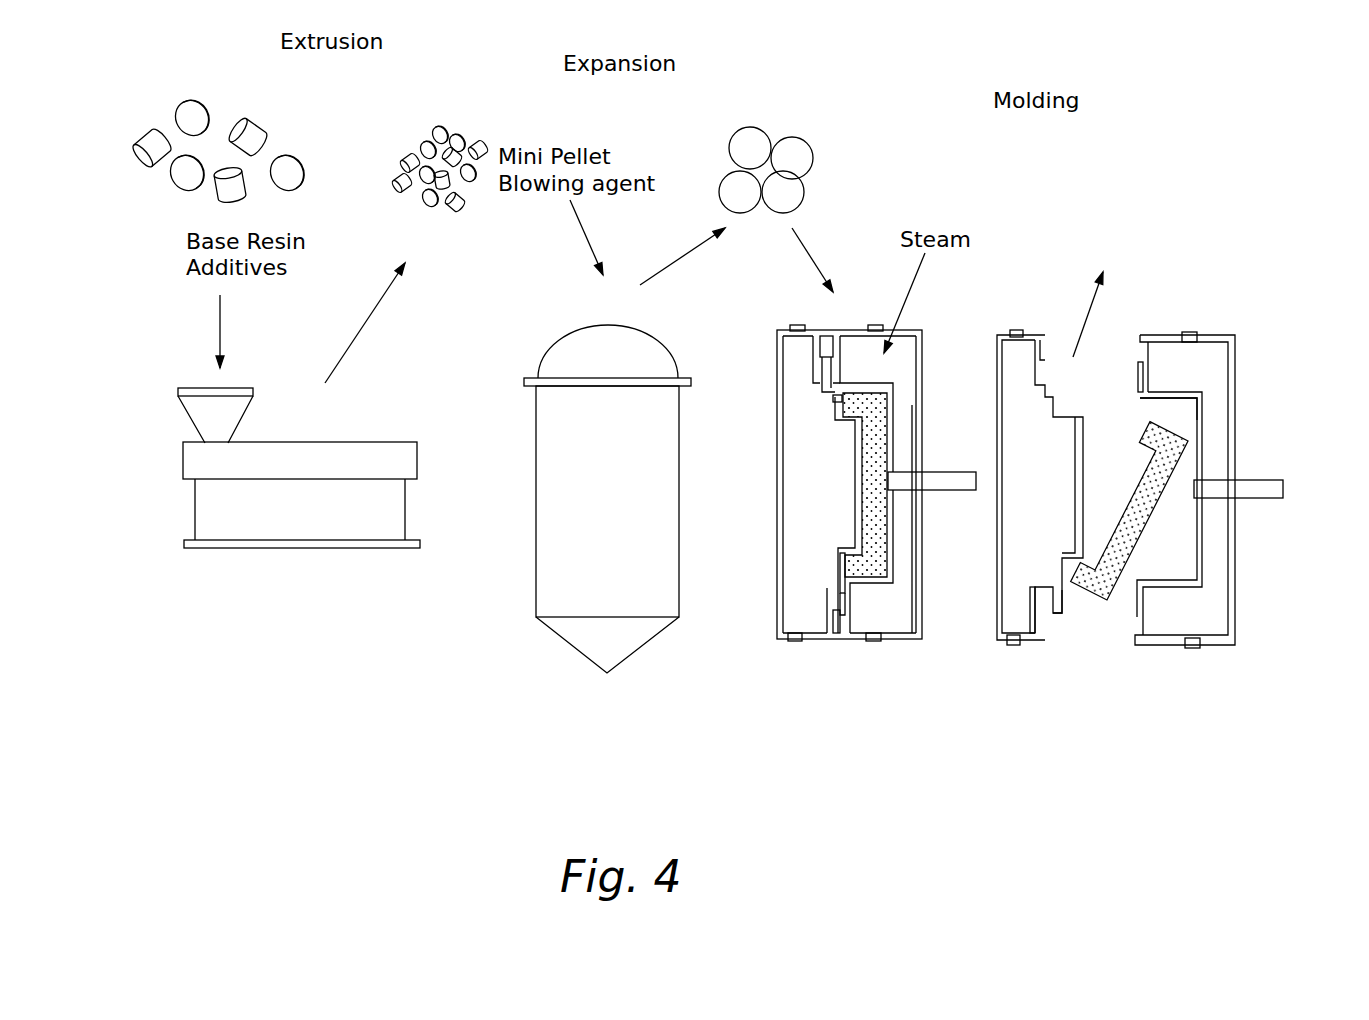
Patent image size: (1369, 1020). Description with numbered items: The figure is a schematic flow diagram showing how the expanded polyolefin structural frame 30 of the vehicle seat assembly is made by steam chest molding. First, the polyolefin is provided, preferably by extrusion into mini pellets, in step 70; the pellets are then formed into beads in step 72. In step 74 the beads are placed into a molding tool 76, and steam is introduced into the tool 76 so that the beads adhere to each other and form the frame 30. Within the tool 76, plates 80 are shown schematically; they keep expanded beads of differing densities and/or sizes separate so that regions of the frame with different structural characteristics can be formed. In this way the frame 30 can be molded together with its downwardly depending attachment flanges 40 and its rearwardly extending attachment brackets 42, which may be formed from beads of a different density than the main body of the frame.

The polymeric frame 30 is at (887, 557).
The attachment flanges 40 is at (1145, 433).
The attachment brackets 42 is at (1073, 607).
The extrusion step 70 is at (299, 500).
The bead forming step 72 is at (607, 515).
The molding step 74 is at (842, 555).
The molding tool 76 is at (888, 613).
The plates 80 is at (838, 398).